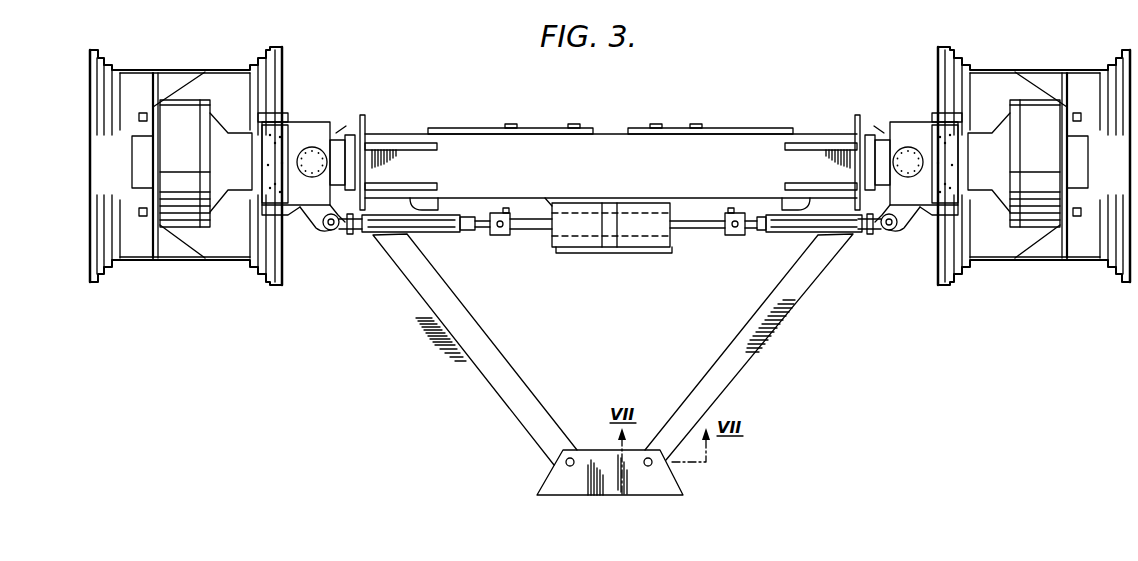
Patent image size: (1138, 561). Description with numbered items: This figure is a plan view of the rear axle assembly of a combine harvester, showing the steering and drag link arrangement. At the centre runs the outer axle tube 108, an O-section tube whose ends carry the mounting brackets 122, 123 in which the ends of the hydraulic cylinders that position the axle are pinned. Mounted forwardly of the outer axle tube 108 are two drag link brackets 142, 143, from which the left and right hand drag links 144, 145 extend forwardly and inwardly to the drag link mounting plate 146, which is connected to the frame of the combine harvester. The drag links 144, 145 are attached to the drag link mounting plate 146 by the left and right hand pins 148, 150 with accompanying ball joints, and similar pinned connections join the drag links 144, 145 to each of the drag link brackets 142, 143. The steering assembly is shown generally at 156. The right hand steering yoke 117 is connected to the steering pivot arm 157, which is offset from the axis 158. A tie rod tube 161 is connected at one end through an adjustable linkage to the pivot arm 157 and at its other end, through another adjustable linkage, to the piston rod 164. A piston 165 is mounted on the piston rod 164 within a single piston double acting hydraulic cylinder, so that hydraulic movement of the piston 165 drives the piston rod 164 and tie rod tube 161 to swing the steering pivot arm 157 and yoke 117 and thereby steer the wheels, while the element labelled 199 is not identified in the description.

The outer axle tube 108 is at (611, 133).
The right hand steering yoke 117 is at (893, 133).
The mounting bracket 122 is at (410, 142).
The mounting bracket 123 is at (806, 143).
The drag link bracket 142 is at (434, 208).
The drag link bracket 143 is at (773, 210).
The drag link 144 is at (751, 358).
The drag link 145 is at (482, 311).
The drag link mounting plate 146 is at (585, 449).
The pin 148 is at (565, 463).
The pin 150 is at (653, 466).
The steering assembly 156 is at (663, 184).
The steering pivot arm 157 is at (909, 228).
The axis 158 is at (907, 160).
The tie rod tube 161 is at (792, 234).
The piston rod 164 is at (695, 216).
The piston 165 is at (620, 205).
The housing plate 199 is at (598, 253).